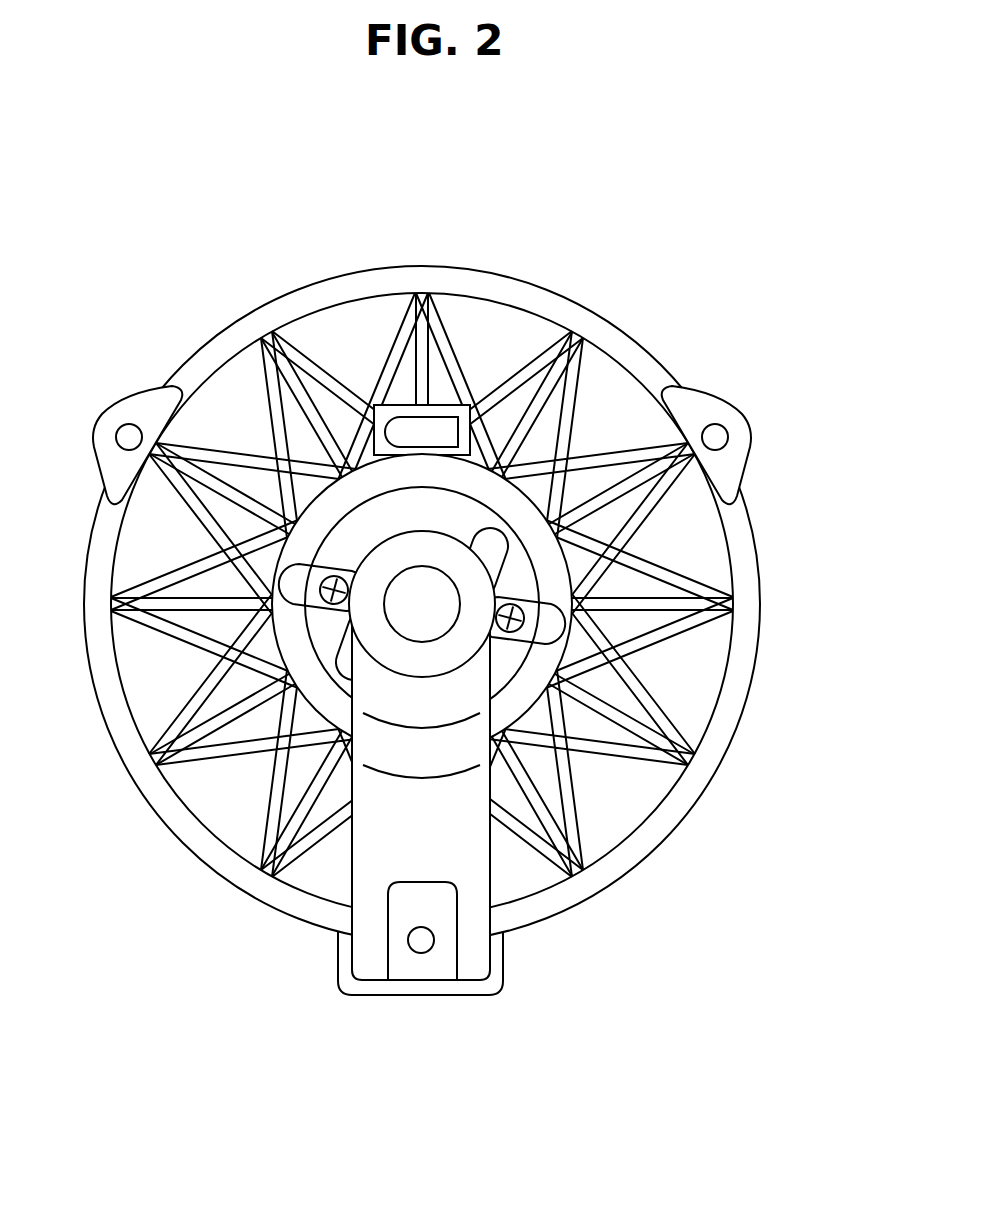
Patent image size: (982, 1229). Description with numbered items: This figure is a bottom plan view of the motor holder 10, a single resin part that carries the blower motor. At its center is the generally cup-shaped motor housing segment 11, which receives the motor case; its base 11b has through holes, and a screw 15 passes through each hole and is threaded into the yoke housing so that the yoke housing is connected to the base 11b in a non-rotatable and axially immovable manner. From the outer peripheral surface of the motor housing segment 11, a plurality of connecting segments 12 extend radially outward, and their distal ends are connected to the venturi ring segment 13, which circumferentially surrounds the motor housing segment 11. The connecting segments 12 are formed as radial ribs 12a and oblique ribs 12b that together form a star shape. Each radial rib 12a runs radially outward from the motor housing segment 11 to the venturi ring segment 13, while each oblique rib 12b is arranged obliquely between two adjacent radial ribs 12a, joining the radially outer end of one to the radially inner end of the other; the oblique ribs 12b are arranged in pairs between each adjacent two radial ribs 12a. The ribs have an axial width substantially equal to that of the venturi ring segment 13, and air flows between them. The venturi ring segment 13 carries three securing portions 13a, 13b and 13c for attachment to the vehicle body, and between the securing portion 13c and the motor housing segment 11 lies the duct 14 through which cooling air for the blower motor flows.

The motor holder 10 is at (495, 275).
The motor housing segment 11 is at (602, 550).
The base 11b is at (325, 697).
The connecting segments 12 is at (509, 625).
The radial ribs 12a is at (697, 580).
The oblique ribs 12b is at (672, 717).
The venturi ring segment 13 is at (628, 328).
The securing portion 13a is at (703, 391).
The securing portion 13b is at (143, 391).
The securing portion 13c is at (421, 965).
The duct 14 is at (484, 842).
The screw 15 is at (332, 578).